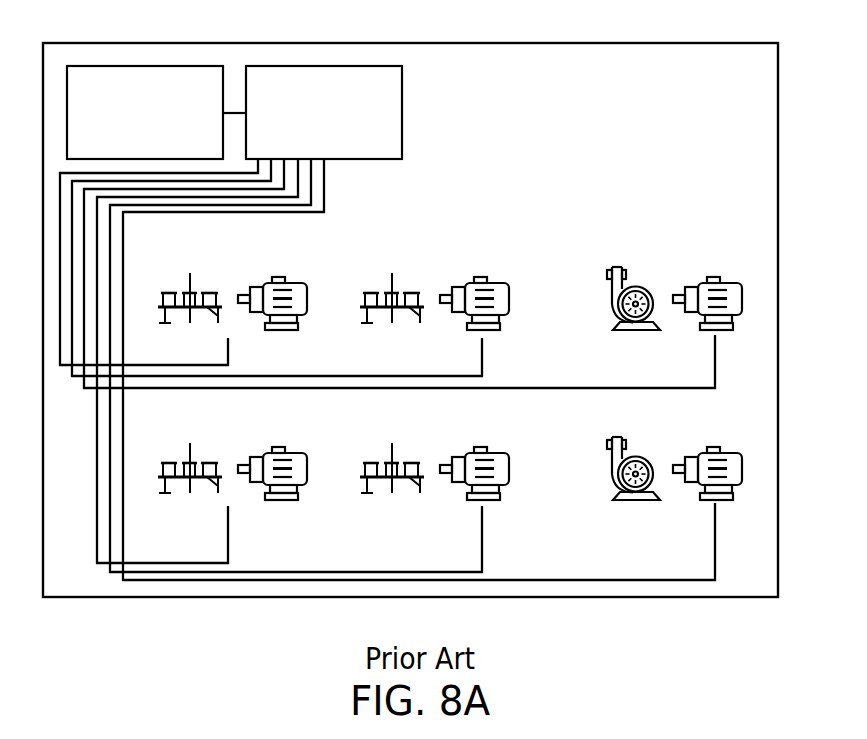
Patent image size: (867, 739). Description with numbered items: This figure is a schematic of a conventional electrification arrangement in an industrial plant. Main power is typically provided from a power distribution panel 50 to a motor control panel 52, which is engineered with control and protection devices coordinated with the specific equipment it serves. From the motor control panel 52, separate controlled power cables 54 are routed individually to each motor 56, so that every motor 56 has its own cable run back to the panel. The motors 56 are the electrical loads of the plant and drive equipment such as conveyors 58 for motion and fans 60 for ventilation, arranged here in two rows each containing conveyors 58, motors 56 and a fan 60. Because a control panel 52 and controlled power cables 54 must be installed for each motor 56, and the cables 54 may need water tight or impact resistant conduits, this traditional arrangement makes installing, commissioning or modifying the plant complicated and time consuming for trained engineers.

The power distribution panel 50 is at (196, 65).
The motor control panel 52 is at (378, 65).
The controlled power cable 54 is at (151, 364).
The motor 56 is at (296, 283).
The conveyor 58 is at (202, 292).
The fan 60 is at (632, 278).